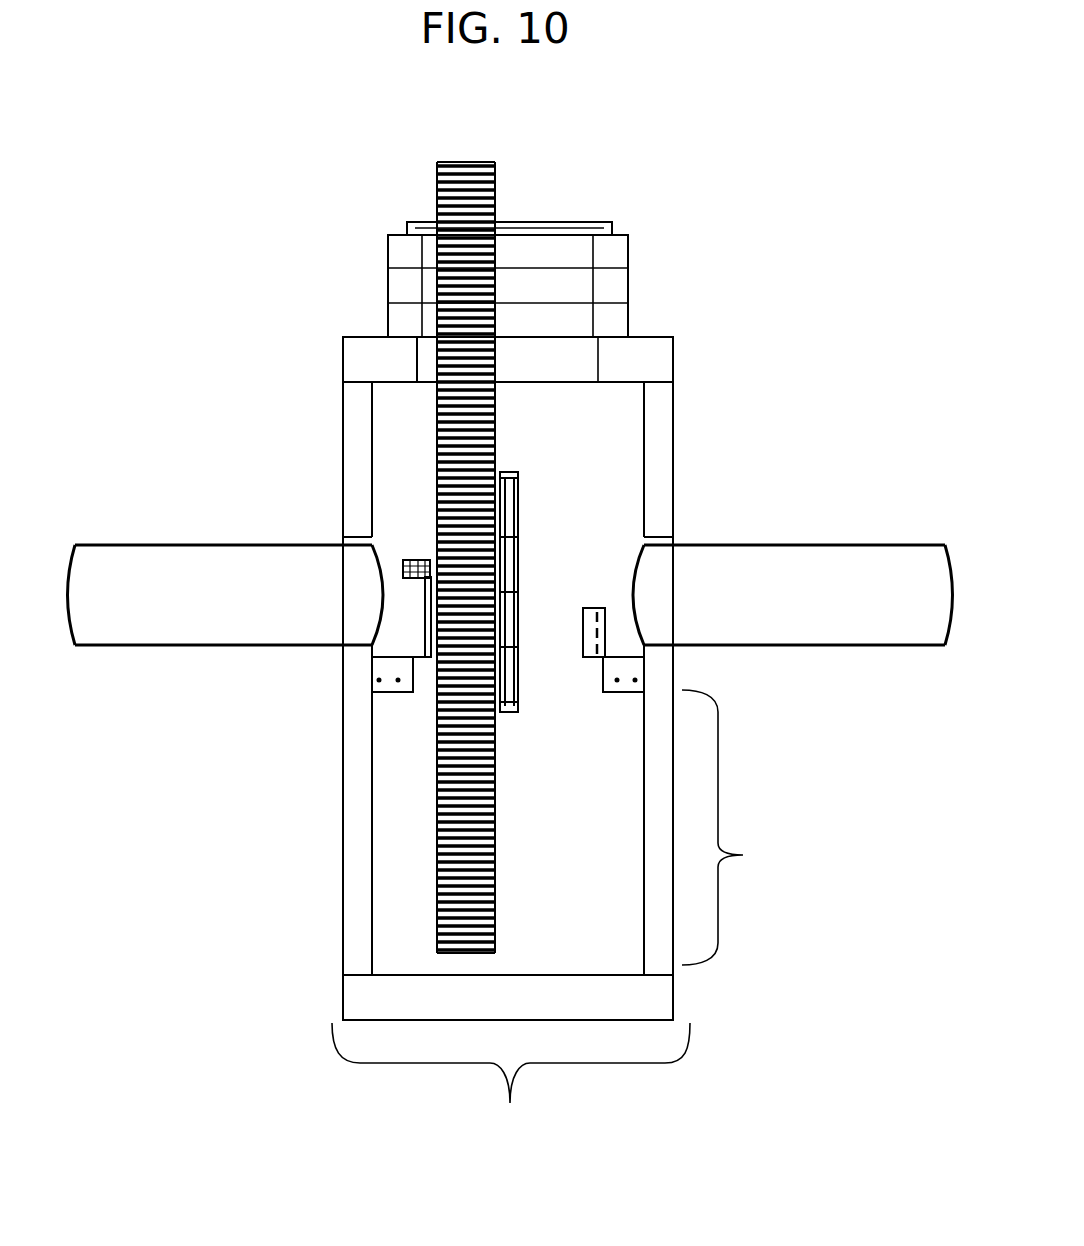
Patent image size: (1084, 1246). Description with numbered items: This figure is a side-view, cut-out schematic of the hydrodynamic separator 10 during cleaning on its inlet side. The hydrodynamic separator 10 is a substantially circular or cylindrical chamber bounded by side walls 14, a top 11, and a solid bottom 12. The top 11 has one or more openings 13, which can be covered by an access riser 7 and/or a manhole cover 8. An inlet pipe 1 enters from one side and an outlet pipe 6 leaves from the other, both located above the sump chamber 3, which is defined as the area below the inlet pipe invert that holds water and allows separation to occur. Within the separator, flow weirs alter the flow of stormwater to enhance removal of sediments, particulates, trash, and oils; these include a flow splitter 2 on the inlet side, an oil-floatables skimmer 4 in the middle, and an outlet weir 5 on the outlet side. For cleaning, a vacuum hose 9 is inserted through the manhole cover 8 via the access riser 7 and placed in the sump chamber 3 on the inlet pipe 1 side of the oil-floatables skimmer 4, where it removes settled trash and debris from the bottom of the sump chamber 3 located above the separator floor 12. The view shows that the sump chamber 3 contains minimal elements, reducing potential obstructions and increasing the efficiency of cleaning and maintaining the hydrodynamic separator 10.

The inlet pipe 1 is at (308, 543).
The flow splitter 2 is at (400, 662).
The sump chamber 3 is at (743, 855).
The oil-floatables skimmer 4 is at (515, 512).
The outlet weir 5 is at (633, 680).
The outlet pipe 6 is at (735, 648).
The access riser 7 is at (610, 253).
The manhole cover 8 is at (538, 222).
The vacuum hose 9 is at (437, 195).
The hydrodynamic separator 10 is at (511, 1089).
The top 11 is at (373, 362).
The solid bottom 12 is at (650, 990).
The opening 13 is at (583, 355).
The side walls 14 is at (358, 886).